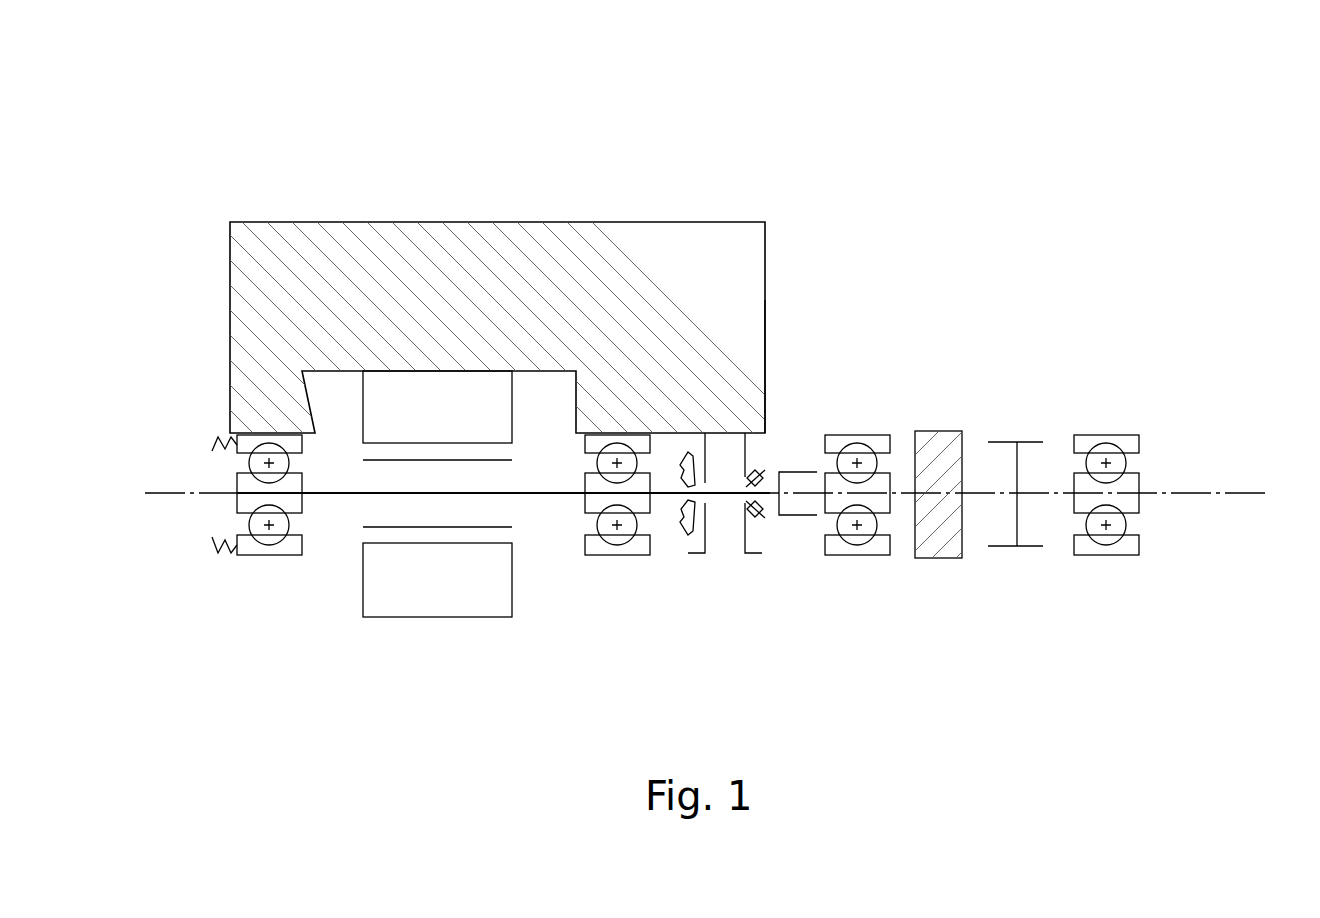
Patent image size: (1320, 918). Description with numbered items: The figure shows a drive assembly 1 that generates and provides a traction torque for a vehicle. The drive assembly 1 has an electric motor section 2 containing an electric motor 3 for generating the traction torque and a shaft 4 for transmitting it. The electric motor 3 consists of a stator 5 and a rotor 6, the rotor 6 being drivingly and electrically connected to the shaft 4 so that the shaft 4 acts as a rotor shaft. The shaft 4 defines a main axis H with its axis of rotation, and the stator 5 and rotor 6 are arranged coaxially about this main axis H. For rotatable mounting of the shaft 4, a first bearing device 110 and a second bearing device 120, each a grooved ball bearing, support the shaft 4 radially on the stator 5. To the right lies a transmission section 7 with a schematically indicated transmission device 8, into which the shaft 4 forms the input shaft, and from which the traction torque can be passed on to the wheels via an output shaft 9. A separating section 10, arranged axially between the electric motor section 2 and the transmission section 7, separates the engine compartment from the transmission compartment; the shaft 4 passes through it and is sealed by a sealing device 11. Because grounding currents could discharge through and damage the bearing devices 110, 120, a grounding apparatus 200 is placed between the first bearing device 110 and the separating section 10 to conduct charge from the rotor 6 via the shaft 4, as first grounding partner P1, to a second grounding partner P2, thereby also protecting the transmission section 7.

The drive assembly 1 is at (1090, 132).
The electric motor section 2 is at (757, 690).
The electric motor 3 is at (548, 200).
The shaft 4 is at (352, 497).
The first grounding partner P1 is at (503, 573).
The stator 5 is at (437, 235).
The rotor 6 is at (442, 590).
The transmission section 7 is at (1140, 690).
The transmission device 8 is at (930, 437).
The output shaft 9 is at (1042, 490).
The separating section 10 is at (760, 574).
The sealing device 11 is at (760, 514).
The first bearing device 110 is at (617, 557).
The second bearing device 120 is at (270, 557).
The grounding apparatus 200 is at (698, 572).
The second grounding partner P2 is at (760, 352).
The main axis H is at (1197, 490).